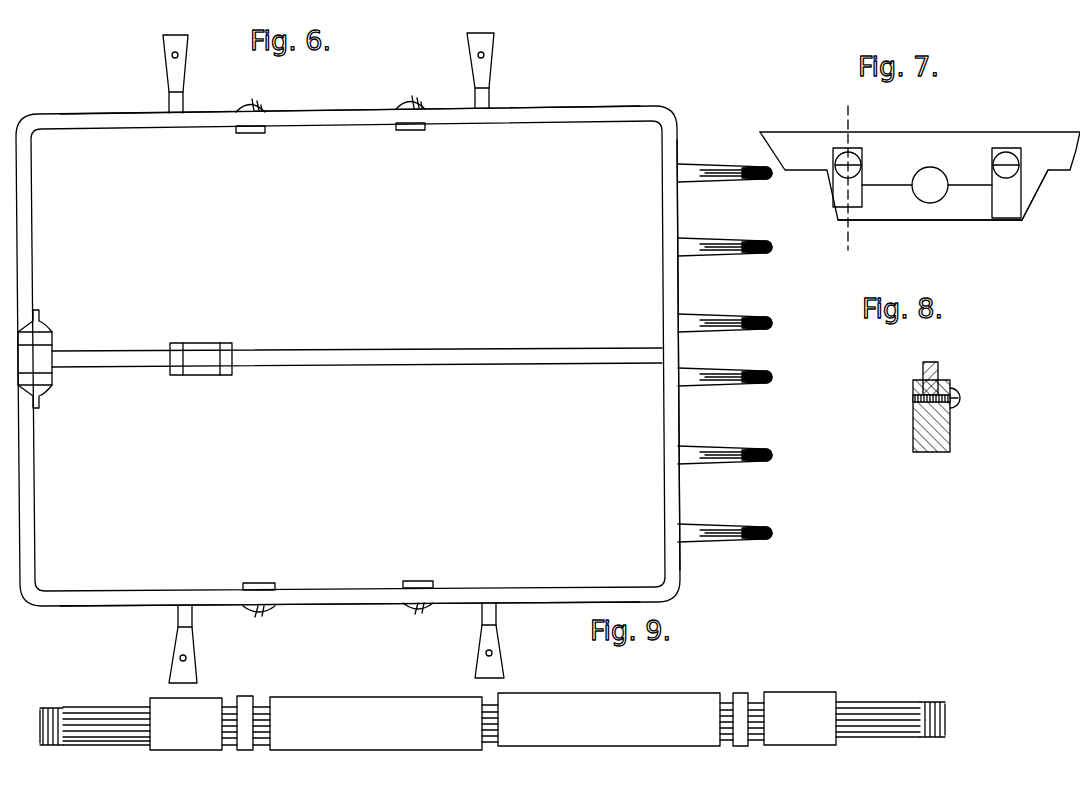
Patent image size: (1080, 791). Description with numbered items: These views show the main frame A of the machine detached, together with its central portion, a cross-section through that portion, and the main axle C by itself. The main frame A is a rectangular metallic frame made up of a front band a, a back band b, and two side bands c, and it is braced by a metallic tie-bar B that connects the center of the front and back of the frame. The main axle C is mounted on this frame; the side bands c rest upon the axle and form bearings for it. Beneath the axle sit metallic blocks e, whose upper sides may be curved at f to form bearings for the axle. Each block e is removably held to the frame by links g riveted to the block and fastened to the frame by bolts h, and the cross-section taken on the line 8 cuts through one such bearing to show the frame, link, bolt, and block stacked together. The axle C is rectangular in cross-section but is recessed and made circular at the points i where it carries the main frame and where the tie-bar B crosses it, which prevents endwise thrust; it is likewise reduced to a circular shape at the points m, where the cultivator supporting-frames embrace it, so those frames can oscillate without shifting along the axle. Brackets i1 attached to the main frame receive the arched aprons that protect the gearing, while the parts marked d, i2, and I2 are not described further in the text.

In FIG. 6, the front band a is at (340, 356).
In FIG. 6, the back band b is at (661, 355).
In FIG. 6, the side band c is at (350, 350).
In FIG. 7, the side band c is at (1041, 179).
In FIG. 6, the main frame A is at (348, 356).
In FIG. 7, the main frame A is at (920, 165).
In FIG. 8, the main frame A is at (932, 366).
In FIG. 6, the tie-bar B is at (340, 359).
In FIG. 9, the main axle C is at (492, 721).
In FIG. 7, the opening d is at (944, 172).
In FIG. 7, the metallic block e is at (930, 206).
In FIG. 8, the metallic block e is at (950, 432).
In FIG. 7, the curved bearing surface f is at (922, 196).
In FIG. 6, the link g is at (266, 106).
In FIG. 7, the link g is at (862, 181).
In FIG. 8, the link g is at (914, 410).
In FIG. 6, the bolt h is at (414, 101).
In FIG. 7, the bolt h is at (855, 158).
In FIG. 8, the bolt h is at (959, 392).
In FIG. 9, the recessed circular section i is at (263, 702).
In FIG. 9, the bracket i1 is at (494, 746).
In FIG. 6, the leg i2 is at (198, 650).
In FIG. 6, the bristle tuft I2 is at (725, 353).
In FIG. 9, the reduced circular portion m is at (223, 702).
In FIG. 7, the section line 8 8 is at (856, 181).